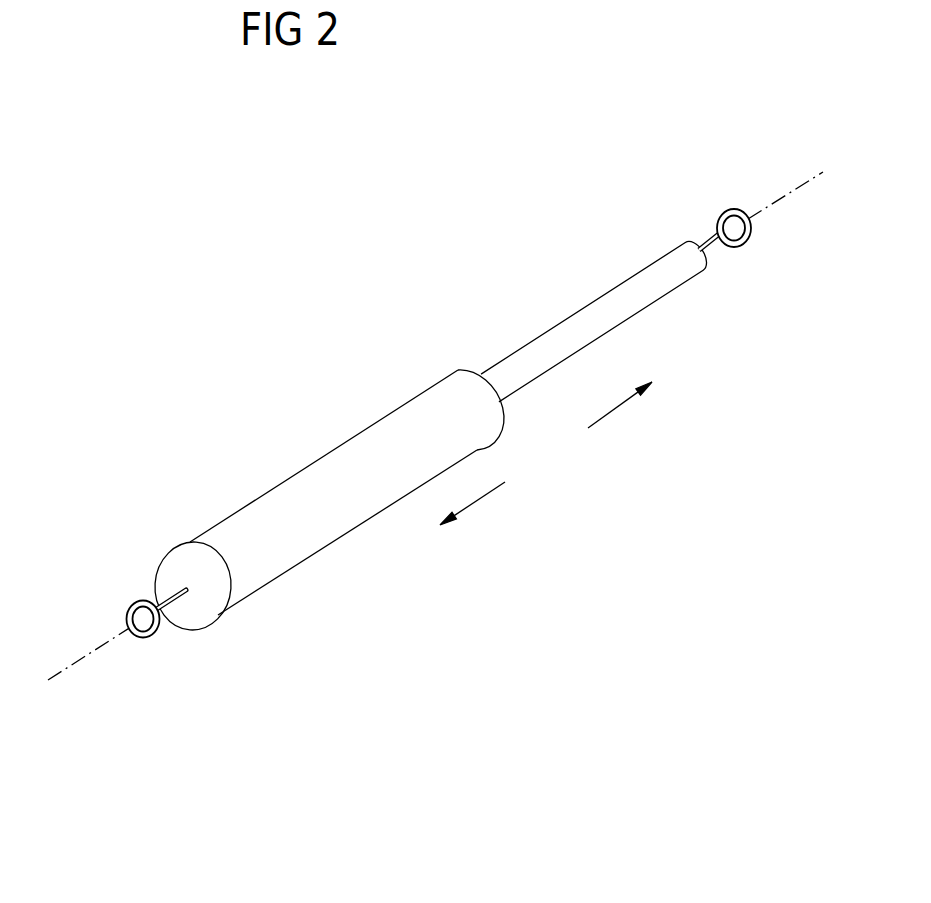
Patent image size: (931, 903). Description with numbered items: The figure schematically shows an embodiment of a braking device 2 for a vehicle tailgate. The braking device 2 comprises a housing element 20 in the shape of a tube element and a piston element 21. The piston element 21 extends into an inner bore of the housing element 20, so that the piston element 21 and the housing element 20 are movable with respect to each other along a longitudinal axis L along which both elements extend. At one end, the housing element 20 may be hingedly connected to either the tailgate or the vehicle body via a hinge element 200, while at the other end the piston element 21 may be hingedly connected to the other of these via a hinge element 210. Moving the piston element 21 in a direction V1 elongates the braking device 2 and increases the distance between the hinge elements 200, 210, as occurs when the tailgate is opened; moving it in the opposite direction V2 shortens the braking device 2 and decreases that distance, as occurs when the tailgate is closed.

The braking device 2 is at (462, 458).
The housing element 20 is at (347, 518).
The piston element 21 is at (585, 322).
The hinge element 200 is at (150, 640).
The hinge element 210 is at (738, 252).
The longitudinal axis L is at (78, 660).
The direction V1 is at (620, 416).
The direction V2 is at (472, 513).